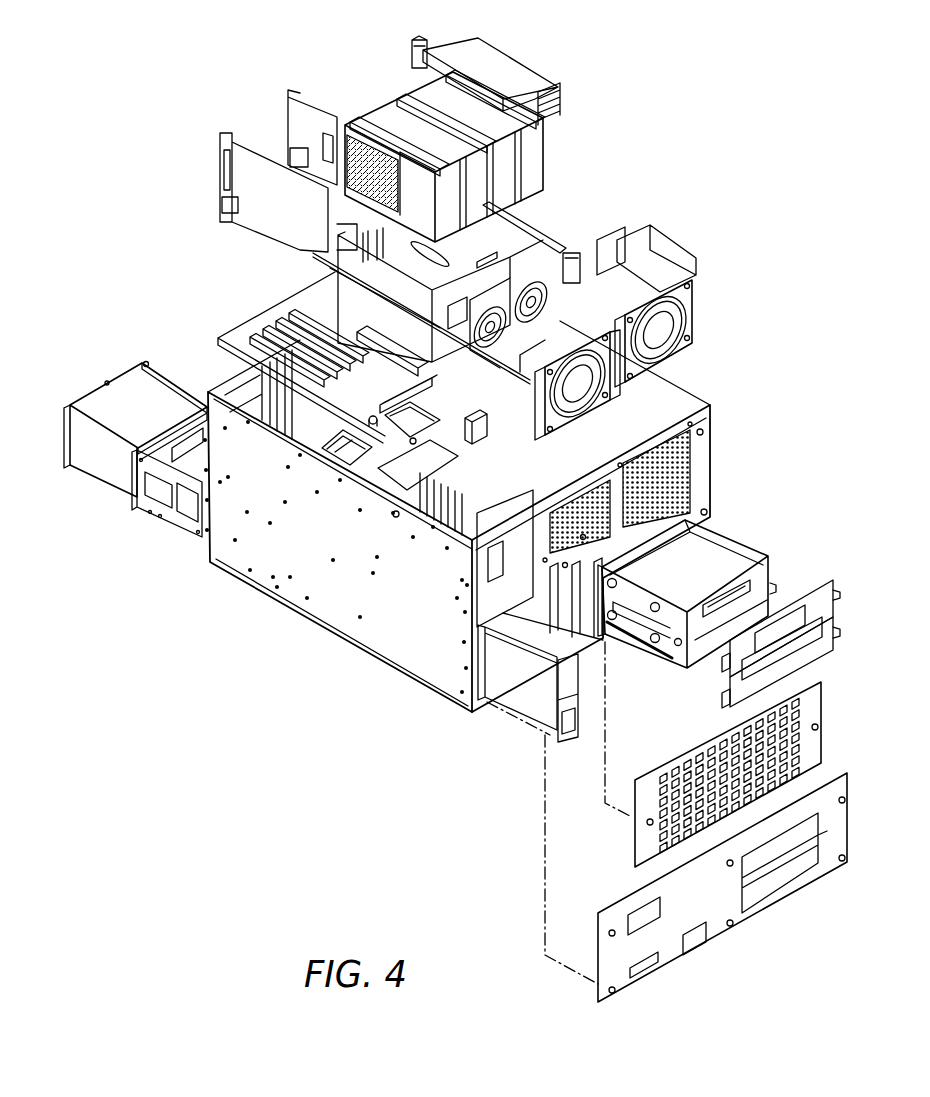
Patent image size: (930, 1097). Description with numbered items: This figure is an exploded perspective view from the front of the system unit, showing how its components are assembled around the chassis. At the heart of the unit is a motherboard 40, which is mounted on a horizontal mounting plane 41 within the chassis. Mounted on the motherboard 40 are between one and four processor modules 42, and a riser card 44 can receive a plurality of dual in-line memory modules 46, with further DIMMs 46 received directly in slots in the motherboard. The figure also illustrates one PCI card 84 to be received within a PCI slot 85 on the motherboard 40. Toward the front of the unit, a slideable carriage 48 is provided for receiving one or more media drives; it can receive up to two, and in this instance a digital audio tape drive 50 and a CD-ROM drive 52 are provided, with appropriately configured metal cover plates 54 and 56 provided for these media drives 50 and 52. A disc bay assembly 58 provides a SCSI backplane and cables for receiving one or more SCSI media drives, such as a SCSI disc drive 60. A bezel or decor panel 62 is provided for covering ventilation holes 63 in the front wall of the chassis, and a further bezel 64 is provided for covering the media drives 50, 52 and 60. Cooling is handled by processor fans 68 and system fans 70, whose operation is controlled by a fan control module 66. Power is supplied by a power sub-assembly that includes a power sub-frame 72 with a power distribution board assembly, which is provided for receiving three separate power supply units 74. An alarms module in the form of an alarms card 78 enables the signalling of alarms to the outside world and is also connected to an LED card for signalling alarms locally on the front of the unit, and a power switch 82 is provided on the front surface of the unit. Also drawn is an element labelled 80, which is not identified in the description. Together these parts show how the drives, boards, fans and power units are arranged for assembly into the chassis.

The motherboard 40 is at (305, 300).
The horizontal mounting plane 41 is at (372, 465).
The processor modules 42 is at (490, 180).
The riser card 44 is at (540, 165).
The dual in-line memory modules (DIMMs) 46 is at (505, 55).
The slideable carriage 48 is at (735, 537).
The digital audio tape (DAT) drive 50 is at (765, 575).
The CD-ROM drive 52 is at (752, 610).
The metal cover plate 54 is at (738, 660).
The metal cover plate 56 is at (738, 700).
The disc bay assembly 58 is at (563, 657).
The SCSI disc drive 60 is at (512, 687).
The bezel (decor panel) 62 is at (640, 822).
The ventilation holes 63 is at (695, 435).
The bezel 64 is at (640, 918).
The fan control module 66 is at (670, 245).
The processor fans 68 is at (590, 240).
The system fans 70 is at (677, 335).
The power sub-frame 72 is at (165, 515).
The power supply units 74 is at (103, 402).
The alarms card 78 is at (300, 125).
The latch 80 is at (495, 432).
The power switch 82 is at (452, 440).
The PCI card 84 is at (275, 212).
The PCI slot 85 is at (312, 315).